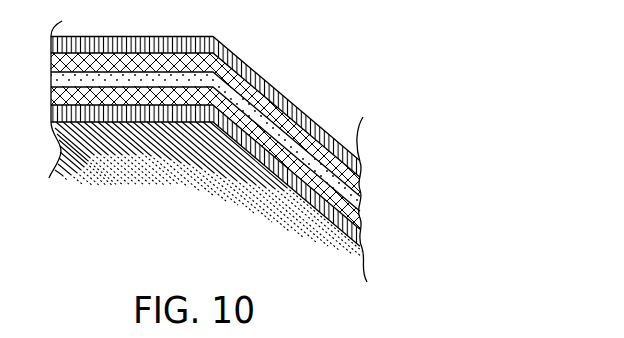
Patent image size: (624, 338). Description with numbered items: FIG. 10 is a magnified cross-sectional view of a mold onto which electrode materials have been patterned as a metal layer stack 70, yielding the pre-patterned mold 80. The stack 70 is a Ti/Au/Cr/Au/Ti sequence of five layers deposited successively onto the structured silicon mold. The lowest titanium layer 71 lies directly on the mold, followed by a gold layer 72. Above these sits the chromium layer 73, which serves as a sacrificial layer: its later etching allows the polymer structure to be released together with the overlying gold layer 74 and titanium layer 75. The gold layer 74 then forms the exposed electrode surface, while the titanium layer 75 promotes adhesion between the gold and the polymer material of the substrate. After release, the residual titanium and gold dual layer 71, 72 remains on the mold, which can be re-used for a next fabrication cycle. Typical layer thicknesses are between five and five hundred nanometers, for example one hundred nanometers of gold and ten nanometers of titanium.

The metal layer stack 70 is at (500, 113).
The titanium layer 71 is at (360, 235).
The gold layer 72 is at (360, 217).
The chromium sacrificial layer 73 is at (362, 191).
The gold layer 74 is at (362, 183).
The titanium layer 75 is at (362, 163).
The pre-patterned mold 80 is at (86, 199).